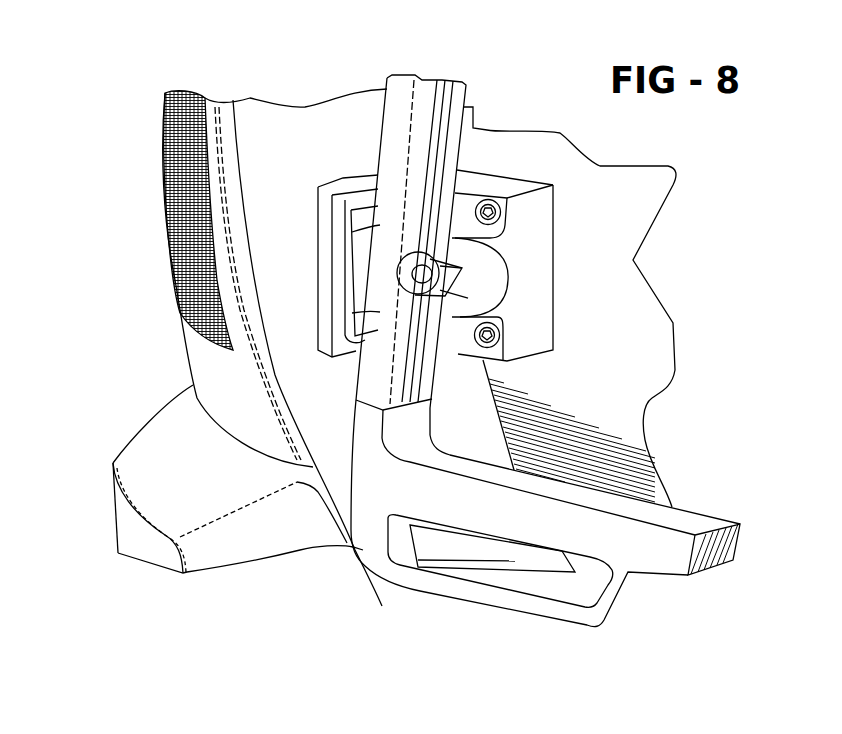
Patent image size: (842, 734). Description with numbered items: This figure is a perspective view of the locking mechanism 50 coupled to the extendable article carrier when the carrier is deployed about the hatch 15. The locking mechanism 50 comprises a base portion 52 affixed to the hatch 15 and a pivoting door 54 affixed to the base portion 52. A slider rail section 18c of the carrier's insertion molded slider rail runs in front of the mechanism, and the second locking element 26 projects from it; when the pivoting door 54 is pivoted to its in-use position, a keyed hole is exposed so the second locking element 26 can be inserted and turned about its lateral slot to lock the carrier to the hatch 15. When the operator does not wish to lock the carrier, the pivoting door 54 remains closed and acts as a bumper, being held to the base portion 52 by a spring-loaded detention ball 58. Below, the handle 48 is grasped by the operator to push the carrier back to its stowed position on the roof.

The hatch 15 is at (620, 403).
The slider rail section 18c is at (403, 85).
The second locking element 26 is at (470, 267).
The handle 48 is at (640, 547).
The locking mechanism 50 is at (500, 163).
The base portion 52 is at (535, 222).
The pivoting door 54 is at (323, 211).
The spring-loaded detention ball 58 is at (485, 304).